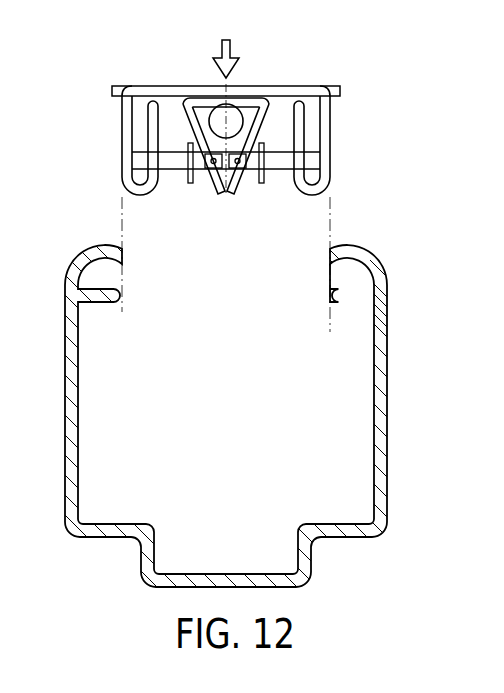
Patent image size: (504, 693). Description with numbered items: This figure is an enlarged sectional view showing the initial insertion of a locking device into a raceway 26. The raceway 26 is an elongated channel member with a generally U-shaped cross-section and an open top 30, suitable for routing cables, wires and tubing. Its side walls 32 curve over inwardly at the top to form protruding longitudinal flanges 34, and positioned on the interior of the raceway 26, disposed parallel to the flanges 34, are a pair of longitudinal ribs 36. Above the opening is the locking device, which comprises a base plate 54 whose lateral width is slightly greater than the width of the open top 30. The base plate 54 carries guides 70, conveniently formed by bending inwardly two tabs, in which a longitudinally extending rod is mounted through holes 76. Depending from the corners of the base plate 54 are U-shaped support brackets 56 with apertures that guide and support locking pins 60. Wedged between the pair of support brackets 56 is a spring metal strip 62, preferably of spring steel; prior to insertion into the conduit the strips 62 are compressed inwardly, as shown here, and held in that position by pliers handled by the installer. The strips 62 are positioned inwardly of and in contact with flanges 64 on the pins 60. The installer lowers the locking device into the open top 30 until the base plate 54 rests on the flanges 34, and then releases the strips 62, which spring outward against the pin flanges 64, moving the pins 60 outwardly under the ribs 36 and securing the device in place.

The raceway 26 is at (387, 522).
The open top 30 is at (238, 262).
The side walls 32 is at (72, 415).
The longitudinal flanges 34 is at (124, 258).
The longitudinal ribs 36 is at (98, 298).
The base plate 54 is at (148, 86).
The U-shaped support brackets 56 is at (125, 134).
The locking pins 60 is at (146, 160).
The spring metal strip 62 is at (237, 190).
The pin flanges 64 is at (190, 183).
The guides 70 is at (245, 103).
The holes 76 is at (222, 115).